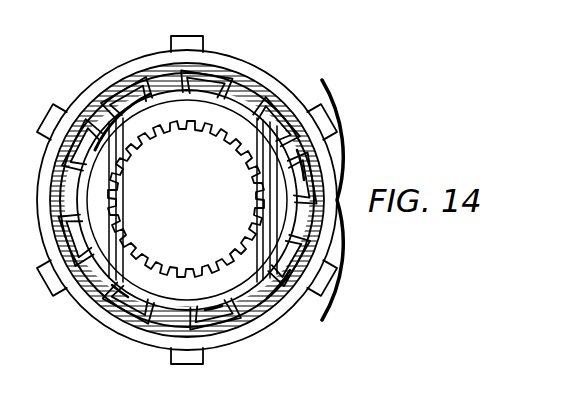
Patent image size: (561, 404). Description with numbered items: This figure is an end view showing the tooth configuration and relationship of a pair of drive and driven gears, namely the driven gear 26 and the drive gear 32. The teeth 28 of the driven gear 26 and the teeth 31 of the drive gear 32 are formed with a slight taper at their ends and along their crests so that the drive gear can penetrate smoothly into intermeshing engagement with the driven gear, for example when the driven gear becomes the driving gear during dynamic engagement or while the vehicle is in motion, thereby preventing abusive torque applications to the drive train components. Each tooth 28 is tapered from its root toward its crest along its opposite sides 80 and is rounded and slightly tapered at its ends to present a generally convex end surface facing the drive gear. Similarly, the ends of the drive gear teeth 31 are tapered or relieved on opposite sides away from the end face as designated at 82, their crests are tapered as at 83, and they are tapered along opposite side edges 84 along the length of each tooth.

The driven gear 26 is at (128, 62).
The tooth of the driven gear 28 is at (240, 97).
The drive gear tooth 31 is at (82, 243).
The drive gear 32 is at (97, 181).
The opposite sides of tooth 80 is at (100, 118).
The tapered or relieved side portions of drive gear tooth ends 82 is at (117, 282).
The tapered crest of drive gear tooth 83 is at (218, 300).
The opposite side edges of drive gear tooth 84 is at (298, 168).